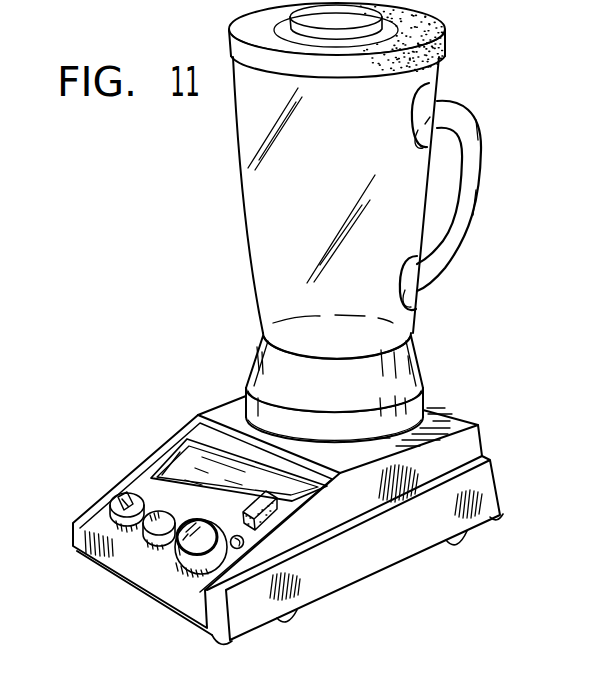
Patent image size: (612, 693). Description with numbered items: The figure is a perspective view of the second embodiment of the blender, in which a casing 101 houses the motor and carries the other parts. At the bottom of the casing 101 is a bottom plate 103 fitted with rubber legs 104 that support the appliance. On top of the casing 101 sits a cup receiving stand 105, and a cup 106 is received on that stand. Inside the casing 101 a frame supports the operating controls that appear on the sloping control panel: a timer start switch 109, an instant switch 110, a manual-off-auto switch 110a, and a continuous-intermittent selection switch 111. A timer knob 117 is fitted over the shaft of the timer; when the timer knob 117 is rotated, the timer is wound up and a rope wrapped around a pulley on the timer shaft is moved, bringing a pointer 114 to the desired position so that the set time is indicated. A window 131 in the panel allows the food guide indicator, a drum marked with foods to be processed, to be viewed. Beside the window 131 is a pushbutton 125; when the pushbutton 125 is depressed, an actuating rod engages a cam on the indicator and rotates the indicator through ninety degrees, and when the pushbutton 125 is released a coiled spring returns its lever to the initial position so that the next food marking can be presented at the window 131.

The casing 101 is at (472, 445).
The bottom plate 103 is at (400, 560).
The rubber legs 104 is at (460, 545).
The cup receiving stand 105 is at (417, 370).
The cup 106 is at (251, 130).
The timer start switch 109 is at (240, 548).
The instant switch 110 is at (122, 495).
The manual-off-auto switch 110a is at (113, 520).
The continuous-intermittent selection switch 111 is at (132, 550).
The pointer 114 is at (181, 458).
The timer knob 117 is at (167, 565).
The pushbutton 125 is at (271, 506).
The window 131 is at (200, 455).